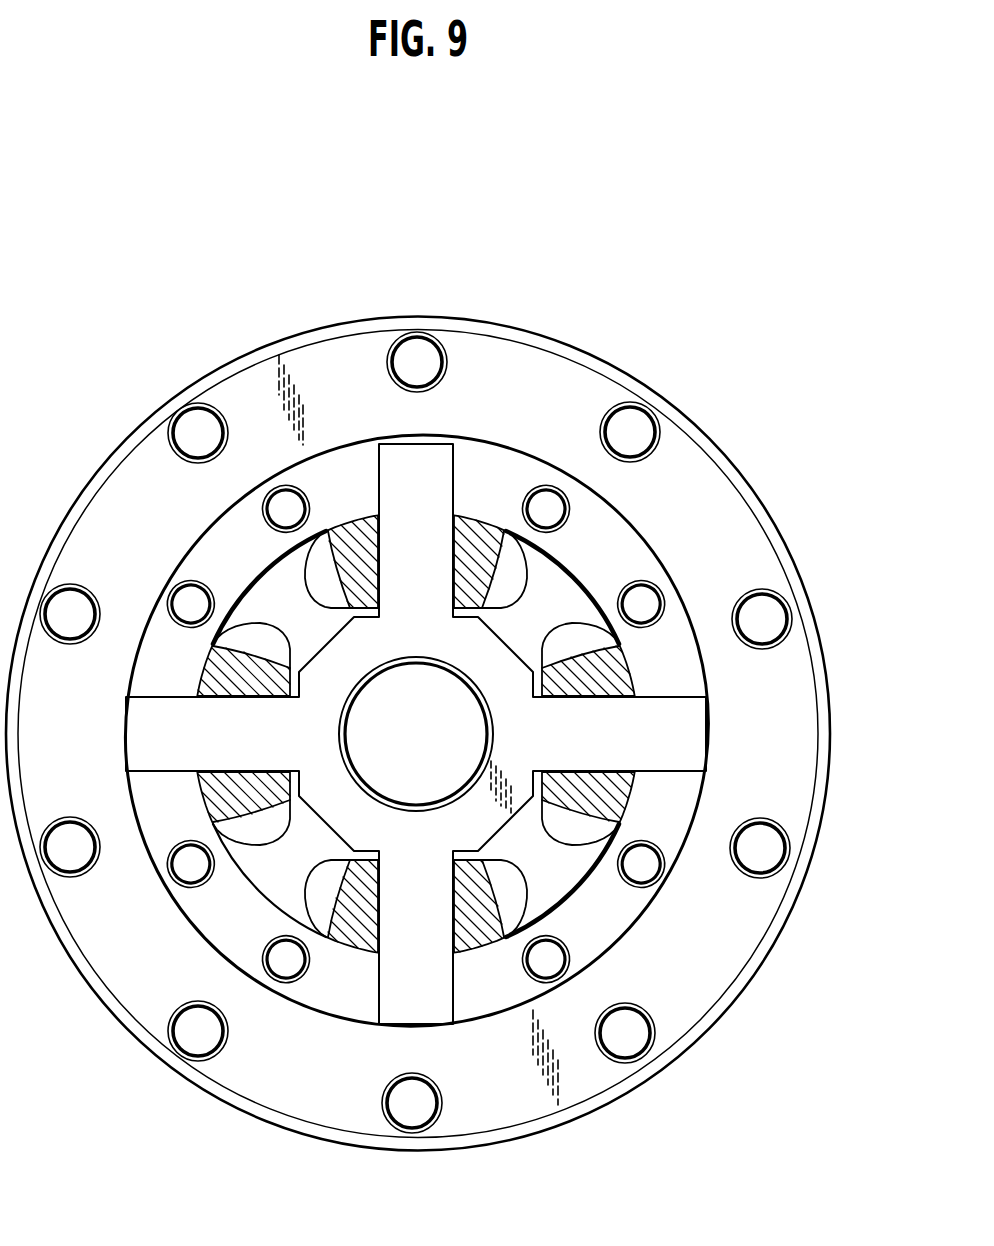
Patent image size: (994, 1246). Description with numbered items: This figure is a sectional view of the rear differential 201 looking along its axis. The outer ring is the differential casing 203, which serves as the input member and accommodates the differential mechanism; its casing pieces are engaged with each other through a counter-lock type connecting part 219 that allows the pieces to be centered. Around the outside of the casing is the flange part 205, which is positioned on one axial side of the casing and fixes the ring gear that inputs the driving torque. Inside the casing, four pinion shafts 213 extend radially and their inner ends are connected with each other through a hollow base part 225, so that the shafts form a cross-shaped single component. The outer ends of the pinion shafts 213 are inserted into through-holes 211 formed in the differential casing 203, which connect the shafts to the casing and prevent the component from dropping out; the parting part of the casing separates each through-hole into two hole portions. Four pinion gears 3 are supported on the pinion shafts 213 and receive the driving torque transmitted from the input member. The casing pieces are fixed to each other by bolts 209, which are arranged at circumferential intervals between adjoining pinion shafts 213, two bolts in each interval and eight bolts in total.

The rear differential 201 is at (703, 243).
The counter-lock type connecting part 219 is at (725, 452).
The differential casing 203 is at (418, 734).
The flange part 205 is at (728, 541).
The bolts 209 is at (291, 504).
The through-holes 211 is at (398, 458).
The pinion shafts 213 is at (440, 597).
The pinion gears 3 is at (371, 542).
The hollow base part 225 is at (358, 646).